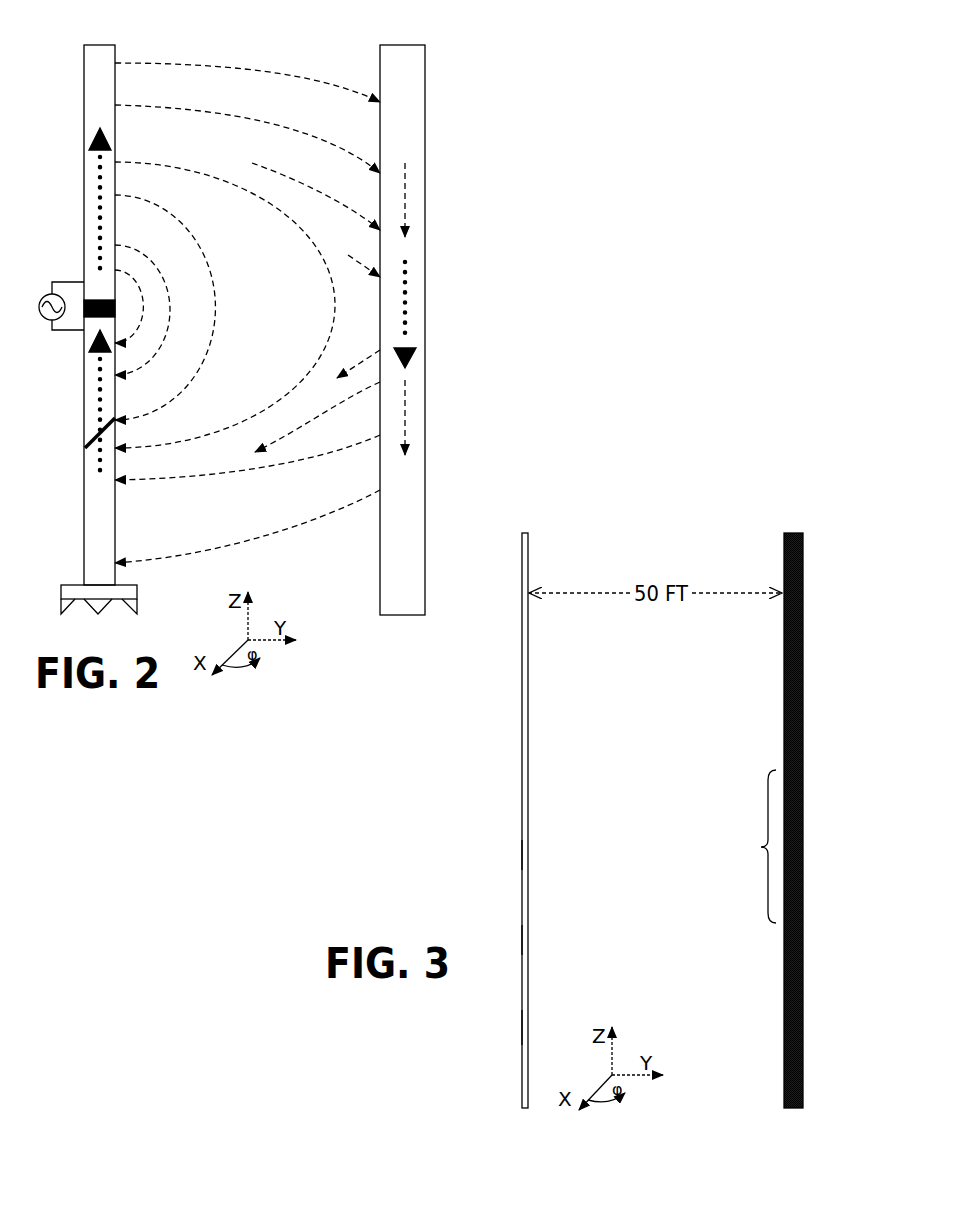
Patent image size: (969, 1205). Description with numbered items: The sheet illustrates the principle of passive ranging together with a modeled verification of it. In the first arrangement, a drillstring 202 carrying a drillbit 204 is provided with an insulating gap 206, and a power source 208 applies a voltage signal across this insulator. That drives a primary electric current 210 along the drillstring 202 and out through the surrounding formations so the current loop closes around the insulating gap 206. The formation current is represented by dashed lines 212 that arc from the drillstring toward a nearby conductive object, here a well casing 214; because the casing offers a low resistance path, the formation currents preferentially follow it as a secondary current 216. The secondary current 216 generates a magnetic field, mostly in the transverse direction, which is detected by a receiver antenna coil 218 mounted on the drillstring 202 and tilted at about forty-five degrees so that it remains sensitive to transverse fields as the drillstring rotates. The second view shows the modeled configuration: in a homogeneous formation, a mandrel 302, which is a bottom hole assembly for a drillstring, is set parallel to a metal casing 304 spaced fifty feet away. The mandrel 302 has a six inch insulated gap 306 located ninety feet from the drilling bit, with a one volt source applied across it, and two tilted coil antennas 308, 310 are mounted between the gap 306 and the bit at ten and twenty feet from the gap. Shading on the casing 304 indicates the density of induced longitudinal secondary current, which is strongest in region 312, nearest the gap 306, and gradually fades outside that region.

In FIG. 2, the drillstring 202 is at (87, 512).
In FIG. 2, the drillbit 204 is at (77, 587).
In FIG. 2, the insulating gap 206 is at (100, 318).
In FIG. 2, the power source 208 is at (47, 316).
In FIG. 2, the primary electric current 210 is at (97, 198).
In FIG. 2, the dashed lines 212 is at (252, 548).
In FIG. 2, the well casing 214 is at (382, 555).
In FIG. 2, the secondary current 216 is at (405, 298).
In FIG. 2, the receiver antenna coil 218 is at (93, 437).
In FIG. 3, the mandrel 302 is at (523, 778).
In FIG. 3, the metal casing 304 is at (787, 580).
In FIG. 3, the insulated gap 306 is at (523, 858).
In FIG. 3, the tilted coil antenna 308 is at (523, 940).
In FIG. 3, the tilted coil antenna 310 is at (523, 1027).
In FIG. 3, the region 312 is at (749, 846).